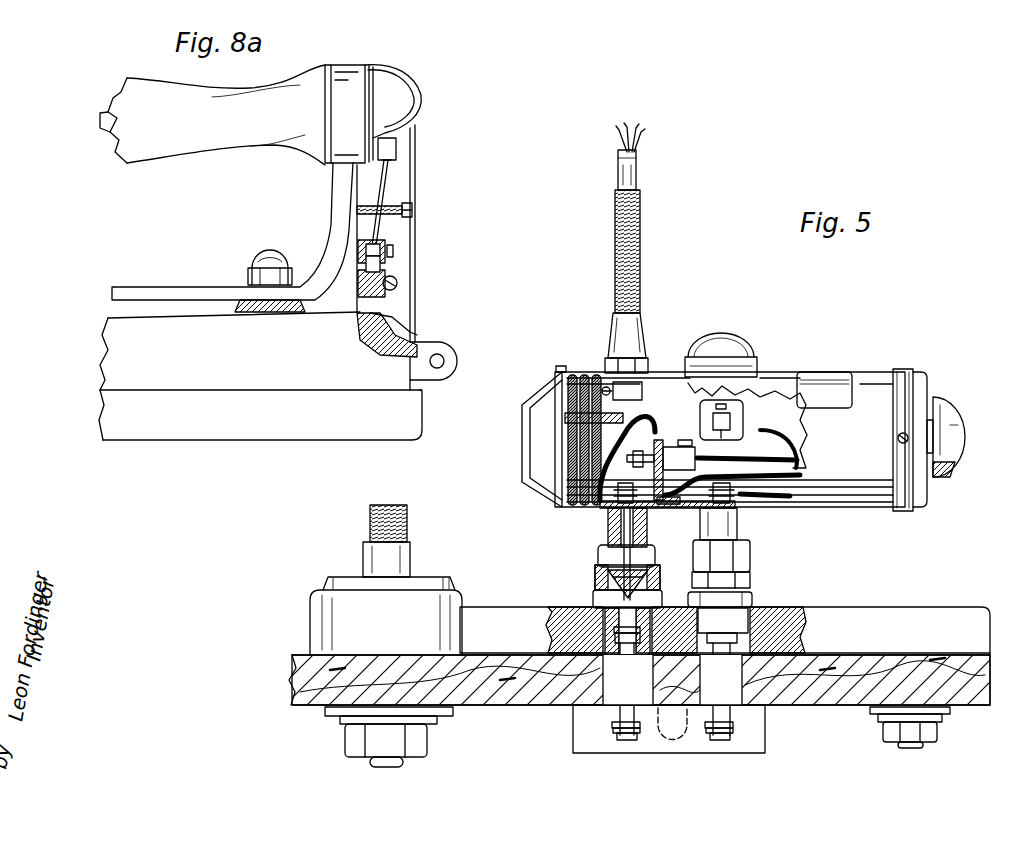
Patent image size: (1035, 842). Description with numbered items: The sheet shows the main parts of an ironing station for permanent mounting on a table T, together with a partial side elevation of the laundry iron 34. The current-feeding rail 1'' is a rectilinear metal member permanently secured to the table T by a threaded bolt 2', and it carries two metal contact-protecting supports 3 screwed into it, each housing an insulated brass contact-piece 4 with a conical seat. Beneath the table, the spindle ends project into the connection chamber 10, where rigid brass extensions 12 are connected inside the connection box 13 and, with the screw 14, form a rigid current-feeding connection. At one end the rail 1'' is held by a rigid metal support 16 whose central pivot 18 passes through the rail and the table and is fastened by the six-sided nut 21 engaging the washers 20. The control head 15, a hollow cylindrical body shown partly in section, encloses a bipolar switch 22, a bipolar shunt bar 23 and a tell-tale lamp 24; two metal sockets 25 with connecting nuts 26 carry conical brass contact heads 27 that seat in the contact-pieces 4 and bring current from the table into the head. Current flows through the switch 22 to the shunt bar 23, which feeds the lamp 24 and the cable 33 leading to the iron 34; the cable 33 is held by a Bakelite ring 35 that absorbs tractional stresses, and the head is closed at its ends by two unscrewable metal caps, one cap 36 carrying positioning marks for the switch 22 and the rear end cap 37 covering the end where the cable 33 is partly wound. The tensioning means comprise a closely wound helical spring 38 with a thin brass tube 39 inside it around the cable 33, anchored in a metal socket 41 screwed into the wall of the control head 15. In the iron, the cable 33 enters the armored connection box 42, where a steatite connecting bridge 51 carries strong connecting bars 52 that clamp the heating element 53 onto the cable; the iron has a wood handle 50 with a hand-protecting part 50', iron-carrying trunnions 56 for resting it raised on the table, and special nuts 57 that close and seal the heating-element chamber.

In FIG. 5, the feed rail 1'' is at (895, 601).
In FIG. 5, the threaded bolt 2' is at (910, 740).
In FIG. 5, the contact-protecting support 3 is at (594, 601).
In FIG. 5, the contact-piece 4 is at (655, 598).
In FIG. 5, the connection chamber 10 is at (743, 633).
In FIG. 5, the brass extension 12 is at (742, 673).
In FIG. 5, the connection box 13 is at (590, 738).
In FIG. 5, the screw 14 is at (714, 739).
In FIG. 5, the control head 15 is at (873, 440).
In FIG. 5, the metal support 16 is at (432, 627).
In FIG. 5, the central pivot 18 is at (390, 558).
In FIG. 5, the washers 20 is at (447, 710).
In FIG. 5, the six-sided nut 21 is at (385, 745).
In FIG. 5, the bipolar switch 22 is at (954, 454).
In FIG. 5, the bipolar shunt bar 23 is at (673, 457).
In FIG. 5, the tell-tale lamp 24 is at (714, 368).
In FIG. 5, the metal socket 25 is at (646, 533).
In FIG. 5, the connecting nut 26 is at (598, 548).
In FIG. 5, the contact head 27 is at (600, 574).
In FIG. 8A, the cable 33 is at (383, 192).
In FIG. 5, the cable 33 is at (560, 392).
In FIG. 8A, the laundry iron 34 is at (160, 362).
In FIG. 5, the ring 35 is at (618, 393).
In FIG. 5, the metal cap 36 is at (905, 392).
In FIG. 5, the end cap 37 is at (521, 441).
In FIG. 5, the helical spring 38 is at (641, 270).
In FIG. 5, the brass tube 39 is at (637, 175).
In FIG. 5, the metal socket 41 is at (628, 337).
In FIG. 8A, the connection box 42 is at (377, 108).
In FIG. 8A, the wood handle 50 is at (208, 115).
In FIG. 8A, the hand-protecting part 50' is at (343, 95).
In FIG. 8A, the connecting bridge 51 is at (390, 294).
In FIG. 8A, the connecting bar 52 is at (390, 262).
In FIG. 8A, the heating element 53 is at (396, 310).
In FIG. 8A, the iron-carrying trunnion 56 is at (444, 382).
In FIG. 8A, the special nut 57 is at (254, 303).
In FIG. 5, the table T is at (992, 680).